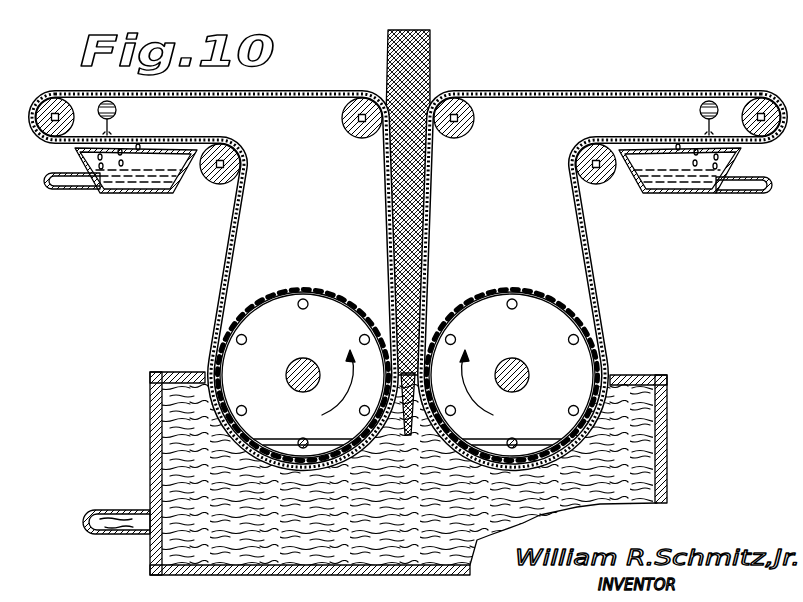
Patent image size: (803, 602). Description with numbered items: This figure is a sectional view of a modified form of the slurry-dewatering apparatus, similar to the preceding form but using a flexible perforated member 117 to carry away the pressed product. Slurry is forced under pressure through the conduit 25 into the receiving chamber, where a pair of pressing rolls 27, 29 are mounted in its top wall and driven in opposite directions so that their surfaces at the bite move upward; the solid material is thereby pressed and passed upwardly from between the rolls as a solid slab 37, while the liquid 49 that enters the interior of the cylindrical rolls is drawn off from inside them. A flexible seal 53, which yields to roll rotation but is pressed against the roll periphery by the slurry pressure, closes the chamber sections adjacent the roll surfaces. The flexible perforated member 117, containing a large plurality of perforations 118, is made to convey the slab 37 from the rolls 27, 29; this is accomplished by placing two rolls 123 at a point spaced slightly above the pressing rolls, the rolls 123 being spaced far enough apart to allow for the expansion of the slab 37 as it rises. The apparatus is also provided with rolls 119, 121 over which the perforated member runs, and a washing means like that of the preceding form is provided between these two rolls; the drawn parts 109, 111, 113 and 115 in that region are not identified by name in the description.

The conduit 25 is at (105, 510).
The pressing roll 27 is at (528, 300).
The pressing roll 29 is at (285, 300).
The slab 37 is at (430, 55).
The liquid 49 is at (523, 448).
The seal 53 is at (617, 383).
The trough 109 is at (90, 191).
The supply pipe 111 is at (78, 184).
The guide roller 113 is at (118, 110).
The scraper 115 is at (110, 131).
The flexible perforated member 117 is at (593, 251).
The perforations 118 is at (585, 222).
The roll 119 is at (213, 181).
The roll 121 is at (50, 136).
The roll 123 is at (343, 124).